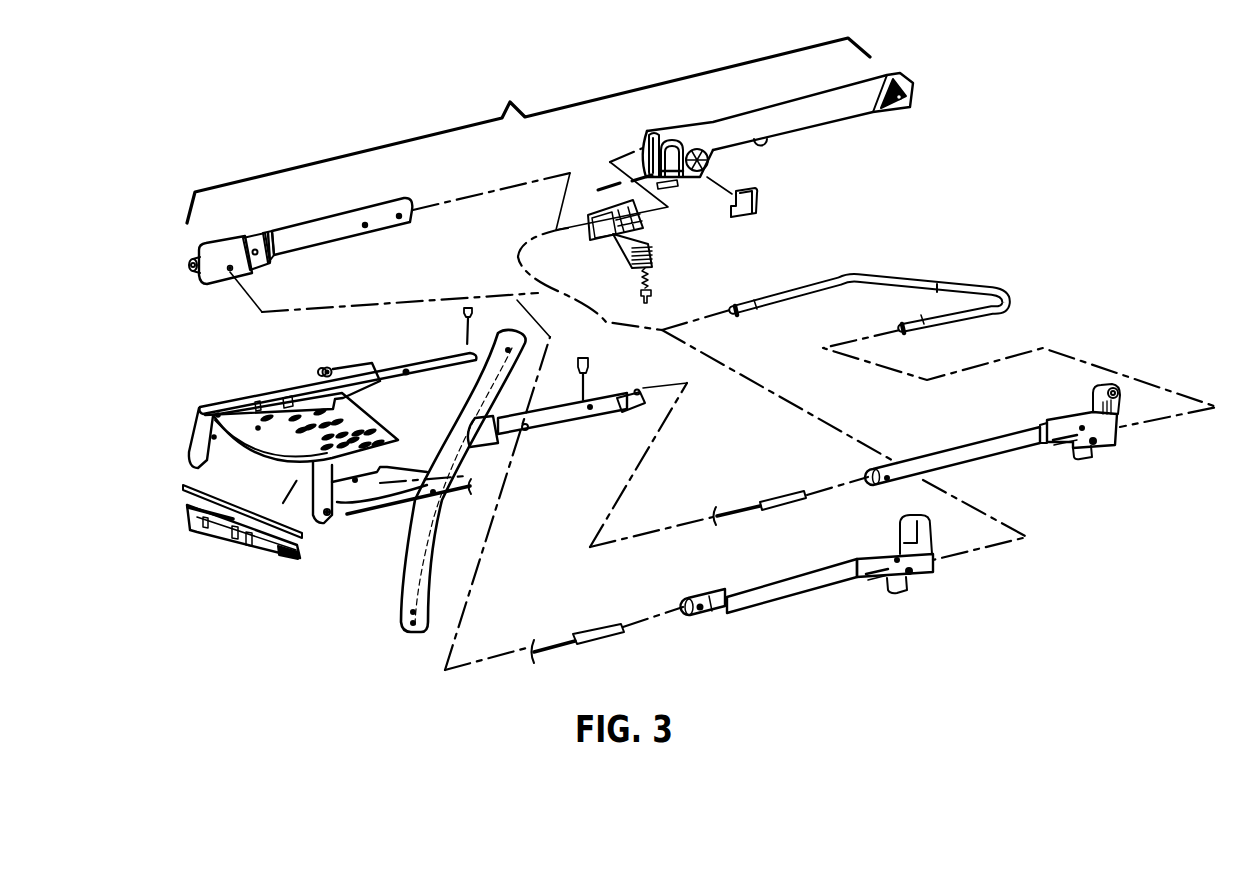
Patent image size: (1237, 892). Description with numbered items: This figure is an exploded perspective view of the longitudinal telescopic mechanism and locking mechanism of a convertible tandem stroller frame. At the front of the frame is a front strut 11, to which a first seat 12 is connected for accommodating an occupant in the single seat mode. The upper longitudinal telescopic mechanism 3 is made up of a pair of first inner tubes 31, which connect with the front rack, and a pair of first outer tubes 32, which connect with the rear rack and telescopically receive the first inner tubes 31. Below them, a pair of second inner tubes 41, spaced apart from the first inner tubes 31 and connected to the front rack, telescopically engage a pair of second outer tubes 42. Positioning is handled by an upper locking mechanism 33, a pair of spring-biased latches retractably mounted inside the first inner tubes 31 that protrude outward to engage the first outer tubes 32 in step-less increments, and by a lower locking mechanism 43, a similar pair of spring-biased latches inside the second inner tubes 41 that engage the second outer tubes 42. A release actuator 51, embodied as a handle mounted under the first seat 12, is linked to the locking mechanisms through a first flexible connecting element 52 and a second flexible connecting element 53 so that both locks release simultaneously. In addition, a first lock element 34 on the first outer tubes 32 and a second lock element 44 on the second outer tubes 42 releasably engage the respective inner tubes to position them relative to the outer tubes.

The upper longitudinal telescopic mechanism 3 is at (510, 102).
The front strut 11 is at (403, 612).
The first seat 12 is at (282, 418).
The first inner tubes 31 is at (325, 230).
The first outer tubes 32 is at (778, 120).
The upper locking mechanism 33 is at (652, 298).
The first lock element 34 is at (757, 212).
The second inner tubes 41 is at (406, 374).
The second outer tubes 42 is at (943, 460).
The lower locking mechanism 43 is at (463, 310).
The second lock element 44 is at (717, 612).
The release actuator 51 is at (227, 537).
The first flexible connecting element 52 is at (465, 435).
The second flexible connecting element 53 is at (367, 515).